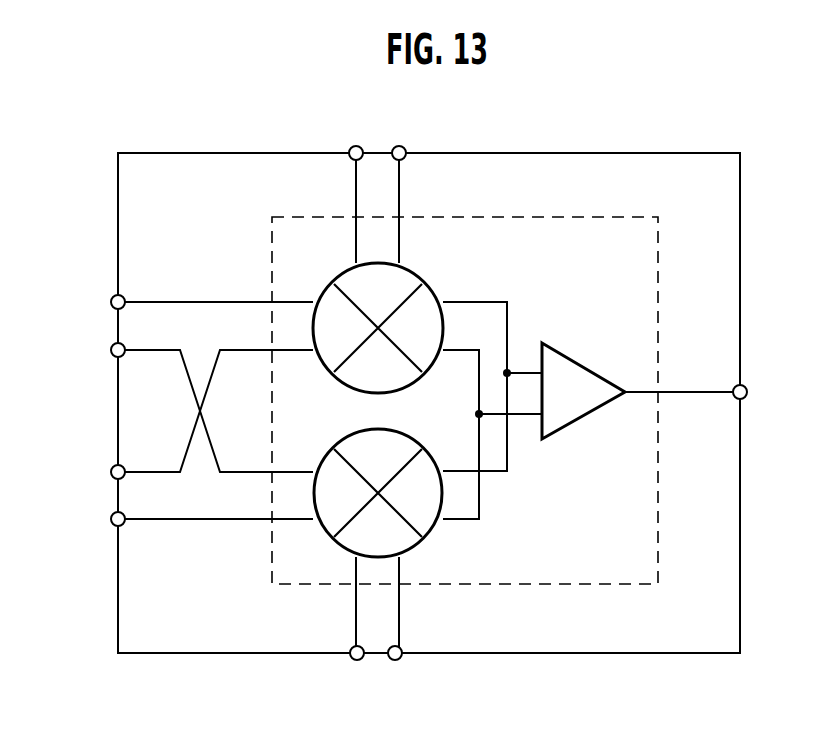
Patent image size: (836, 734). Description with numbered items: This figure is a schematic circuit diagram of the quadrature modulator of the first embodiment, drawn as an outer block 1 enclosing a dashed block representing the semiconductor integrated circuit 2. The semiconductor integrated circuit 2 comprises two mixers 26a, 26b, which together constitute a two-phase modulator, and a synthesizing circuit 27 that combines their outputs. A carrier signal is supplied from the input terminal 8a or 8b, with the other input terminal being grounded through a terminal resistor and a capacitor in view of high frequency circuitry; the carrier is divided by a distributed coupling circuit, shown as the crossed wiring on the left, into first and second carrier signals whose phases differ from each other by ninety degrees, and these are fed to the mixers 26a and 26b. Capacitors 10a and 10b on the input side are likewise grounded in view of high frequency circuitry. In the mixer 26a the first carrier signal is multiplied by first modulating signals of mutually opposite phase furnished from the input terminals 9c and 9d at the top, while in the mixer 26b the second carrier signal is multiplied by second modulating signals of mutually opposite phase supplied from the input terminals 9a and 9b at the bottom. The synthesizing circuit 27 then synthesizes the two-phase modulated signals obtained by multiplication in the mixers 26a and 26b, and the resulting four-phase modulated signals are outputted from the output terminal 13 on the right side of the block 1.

The housing / circuit board 1 is at (673, 645).
The semiconductor integrated circuit 2 is at (658, 238).
The input terminal 8a is at (112, 350).
The input terminal 8b is at (112, 470).
The capacitor 10a is at (112, 517).
The capacitor 10b is at (112, 296).
The input terminal 9a is at (358, 661).
The input terminal 9b is at (396, 661).
The input terminal 9c is at (352, 147).
The input terminal 9d is at (402, 146).
The output terminal 13 is at (748, 385).
The mixer 26a is at (432, 300).
The mixer 26b is at (407, 440).
The synthesizing circuit 27 is at (587, 378).